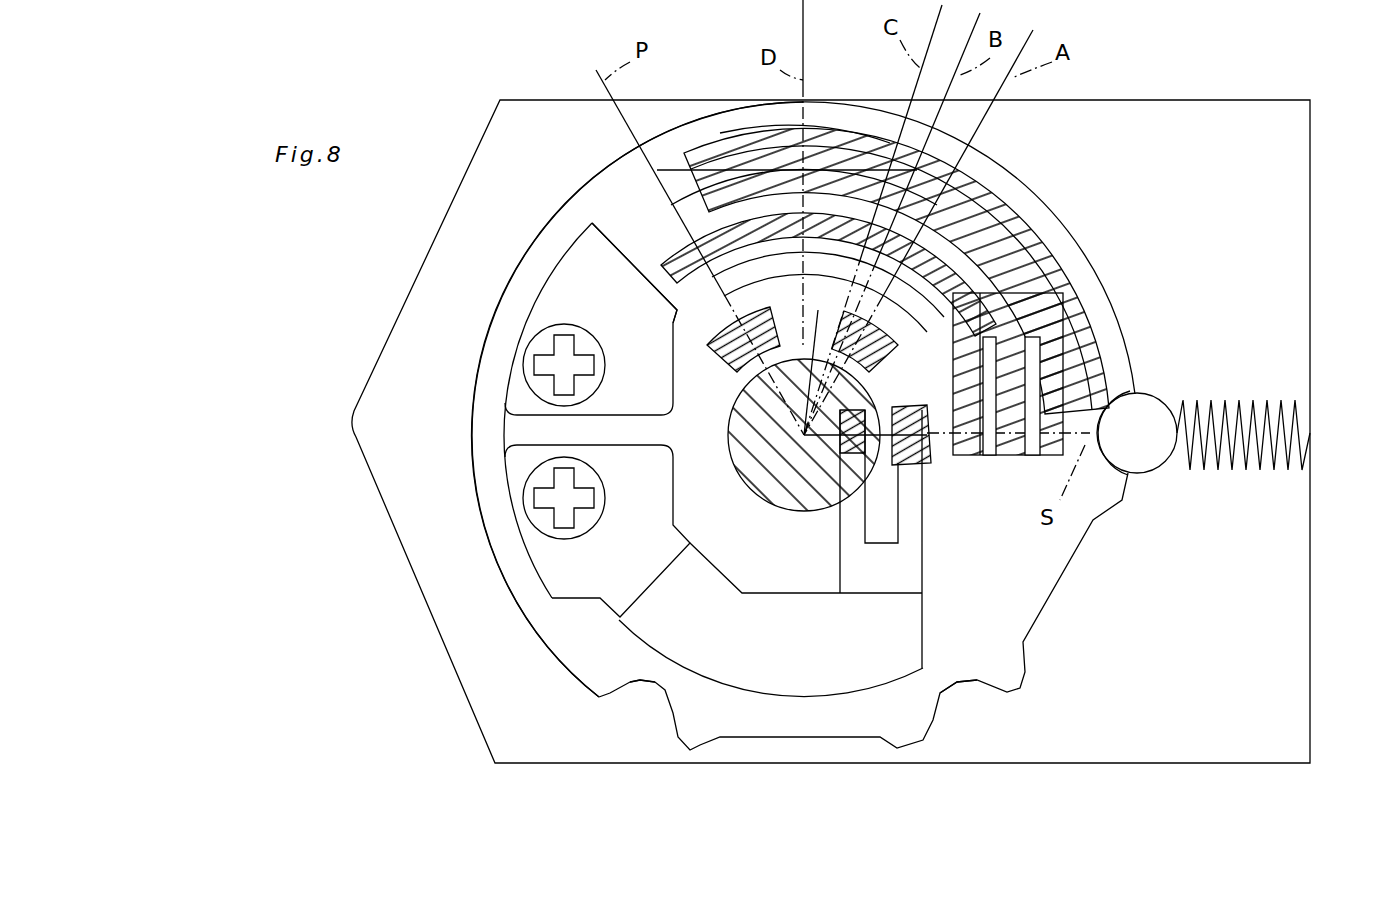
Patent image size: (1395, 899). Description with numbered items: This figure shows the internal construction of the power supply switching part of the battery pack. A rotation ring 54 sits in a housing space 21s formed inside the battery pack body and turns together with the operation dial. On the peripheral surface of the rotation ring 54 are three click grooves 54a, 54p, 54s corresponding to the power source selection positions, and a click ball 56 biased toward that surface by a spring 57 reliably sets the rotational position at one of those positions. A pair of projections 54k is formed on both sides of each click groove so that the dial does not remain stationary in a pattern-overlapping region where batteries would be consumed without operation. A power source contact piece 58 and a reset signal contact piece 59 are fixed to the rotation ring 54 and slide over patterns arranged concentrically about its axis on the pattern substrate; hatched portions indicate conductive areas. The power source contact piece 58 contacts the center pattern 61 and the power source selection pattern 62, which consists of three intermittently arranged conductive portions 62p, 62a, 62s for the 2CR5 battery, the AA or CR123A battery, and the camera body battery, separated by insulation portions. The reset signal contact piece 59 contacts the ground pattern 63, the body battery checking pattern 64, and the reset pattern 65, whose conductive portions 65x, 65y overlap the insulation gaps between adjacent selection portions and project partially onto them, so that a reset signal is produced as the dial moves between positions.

The housing space 21s is at (1257, 200).
The rotation ring 54 is at (478, 368).
The click groove 54a is at (965, 690).
The projections 54k is at (690, 752).
The click groove 54p is at (645, 683).
The click groove 54s is at (1140, 462).
The click ball 56 is at (1152, 400).
The spring 57 is at (1252, 398).
The power source contact piece 58 is at (520, 543).
The reset signal contact piece 59 is at (555, 263).
The center pattern 61 is at (770, 498).
The power source selection pattern 62 is at (722, 352).
The electrically conductive portion 62a is at (878, 350).
The electrically conductive portion 62p is at (783, 333).
The electrically conductive portion 62s is at (928, 463).
The ground pattern 63 is at (673, 328).
The body battery checking pattern 64 is at (665, 268).
The reset pattern 65 is at (715, 137).
The electrically conductive portion 65x is at (833, 143).
The electrically conductive portion 65y is at (1103, 303).